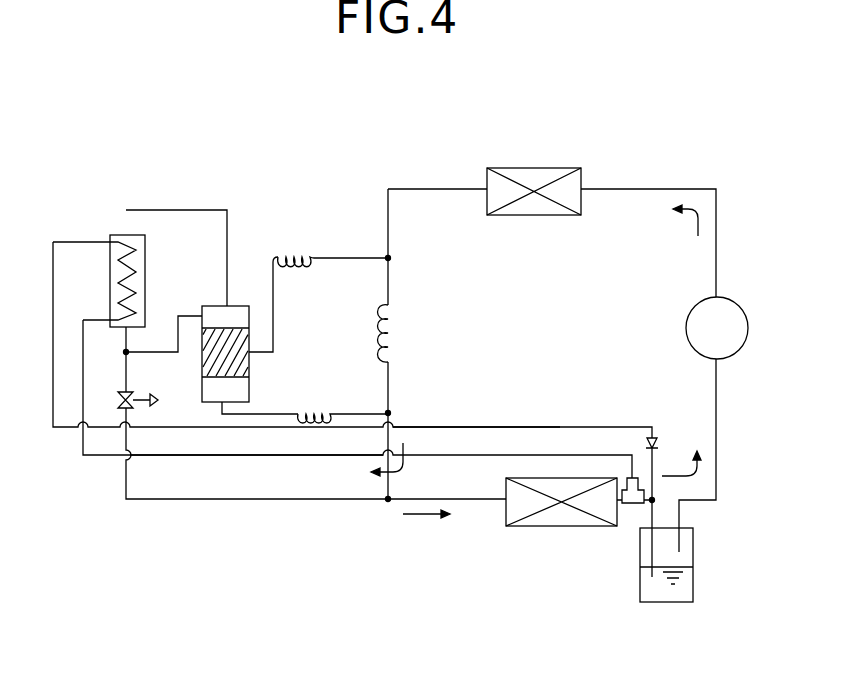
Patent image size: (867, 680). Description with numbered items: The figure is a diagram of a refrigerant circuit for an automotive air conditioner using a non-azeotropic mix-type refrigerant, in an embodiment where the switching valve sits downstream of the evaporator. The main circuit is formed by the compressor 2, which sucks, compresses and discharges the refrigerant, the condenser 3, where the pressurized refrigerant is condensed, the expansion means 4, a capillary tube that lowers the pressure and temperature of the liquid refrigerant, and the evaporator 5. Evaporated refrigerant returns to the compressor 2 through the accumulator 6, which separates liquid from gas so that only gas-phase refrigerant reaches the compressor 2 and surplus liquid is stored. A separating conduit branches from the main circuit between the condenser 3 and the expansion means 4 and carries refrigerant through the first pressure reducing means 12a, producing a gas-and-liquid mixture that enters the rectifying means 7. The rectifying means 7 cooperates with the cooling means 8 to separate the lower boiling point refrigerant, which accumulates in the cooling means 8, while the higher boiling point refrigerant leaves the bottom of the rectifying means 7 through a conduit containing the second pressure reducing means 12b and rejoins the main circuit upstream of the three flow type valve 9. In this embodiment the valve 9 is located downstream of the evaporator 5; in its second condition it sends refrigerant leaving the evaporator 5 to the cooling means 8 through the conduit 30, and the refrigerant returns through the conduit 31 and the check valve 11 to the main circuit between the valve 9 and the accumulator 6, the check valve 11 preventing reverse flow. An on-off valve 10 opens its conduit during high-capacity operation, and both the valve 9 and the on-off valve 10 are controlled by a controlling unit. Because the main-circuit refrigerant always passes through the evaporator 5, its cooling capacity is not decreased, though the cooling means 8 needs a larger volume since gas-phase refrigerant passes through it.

The compressor 2 is at (738, 313).
The condenser 3 is at (530, 168).
The expansion means 4 is at (398, 330).
The evaporator 5 is at (545, 527).
The accumulator 6 is at (693, 558).
The rectifying means 7 is at (238, 304).
The cooling means 8 is at (146, 258).
The three flow type valve 9 is at (628, 508).
The on-off valve 10 is at (138, 405).
The check valve 11 is at (660, 442).
The first pressure reducing means 12a is at (300, 245).
The second pressure reducing means 12b is at (323, 406).
The conduit 30 is at (480, 460).
The conduit 31 is at (573, 427).